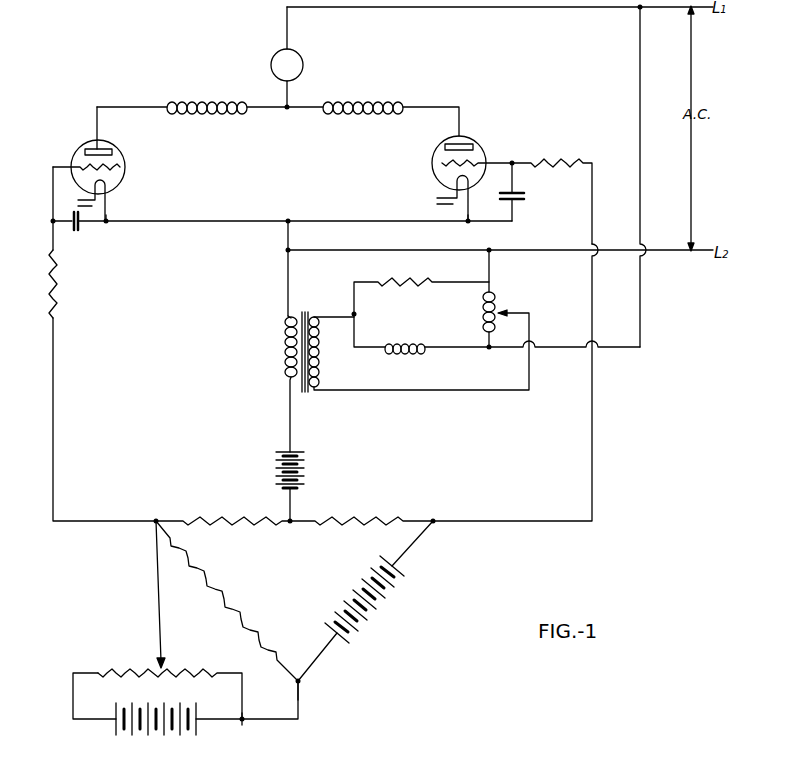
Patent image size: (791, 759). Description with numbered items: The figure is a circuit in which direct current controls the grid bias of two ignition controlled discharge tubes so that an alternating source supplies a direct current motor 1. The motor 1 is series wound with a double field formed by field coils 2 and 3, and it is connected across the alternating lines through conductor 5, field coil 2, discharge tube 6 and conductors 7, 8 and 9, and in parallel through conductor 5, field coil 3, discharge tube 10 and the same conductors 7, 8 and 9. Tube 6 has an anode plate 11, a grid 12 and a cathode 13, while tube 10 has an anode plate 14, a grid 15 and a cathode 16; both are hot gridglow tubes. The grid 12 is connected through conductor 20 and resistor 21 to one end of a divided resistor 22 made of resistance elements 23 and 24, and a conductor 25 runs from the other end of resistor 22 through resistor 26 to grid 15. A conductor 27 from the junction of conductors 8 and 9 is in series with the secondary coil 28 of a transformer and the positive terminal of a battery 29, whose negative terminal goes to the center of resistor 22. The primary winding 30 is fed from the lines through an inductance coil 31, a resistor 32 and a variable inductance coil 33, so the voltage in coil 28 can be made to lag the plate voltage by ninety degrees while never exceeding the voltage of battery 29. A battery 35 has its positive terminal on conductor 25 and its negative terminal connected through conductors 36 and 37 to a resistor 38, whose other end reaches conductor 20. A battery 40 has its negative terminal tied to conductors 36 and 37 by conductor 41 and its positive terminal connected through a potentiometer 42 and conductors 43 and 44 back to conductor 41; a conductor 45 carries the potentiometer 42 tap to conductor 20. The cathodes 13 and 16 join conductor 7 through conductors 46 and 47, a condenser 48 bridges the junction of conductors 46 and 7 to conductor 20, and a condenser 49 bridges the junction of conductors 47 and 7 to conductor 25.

The direct current motor 1 is at (273, 56).
The field coil 2 is at (197, 100).
The field coil 3 is at (364, 100).
The conductor 5 is at (464, 8).
The ignition controlled discharge tube 6 is at (78, 146).
The conductor 7 is at (197, 229).
The conductor 8 is at (284, 244).
The conductor 9 is at (416, 251).
The ignition control discharge tube 10 is at (480, 140).
The anode plate 11 is at (104, 150).
The grid 12 is at (124, 165).
The cathode 13 is at (113, 181).
The anode plate 14 is at (452, 142).
The grid 15 is at (440, 163).
The cathode 16 is at (443, 178).
The conductor 20 is at (48, 210).
The resistor 21 is at (58, 302).
The divided resistor 22 is at (292, 527).
The resistance element 23 is at (224, 518).
The resistance element 24 is at (373, 518).
The conductor 25 is at (523, 160).
The resistor 26 is at (568, 158).
The conductor 27 is at (285, 288).
The secondary coil 28 is at (285, 352).
The battery 29 is at (288, 452).
The primary winding 30 is at (322, 370).
The inductance coil 31 is at (414, 352).
The resistor 32 is at (410, 285).
The variable inductance coil 33 is at (497, 295).
The battery 35 is at (382, 602).
The conductor 36 is at (318, 665).
The conductor 37 is at (285, 665).
The resistor 38 is at (237, 610).
The battery 40 is at (185, 735).
The conductor 41 is at (288, 722).
The potentiometer 42 is at (152, 668).
The conductor 43 is at (73, 715).
The conductor 44 is at (243, 707).
The conductor 45 is at (156, 588).
The conductor 46 is at (110, 226).
The conductor 47 is at (470, 224).
The condenser 48 is at (78, 232).
The condenser 49 is at (525, 198).